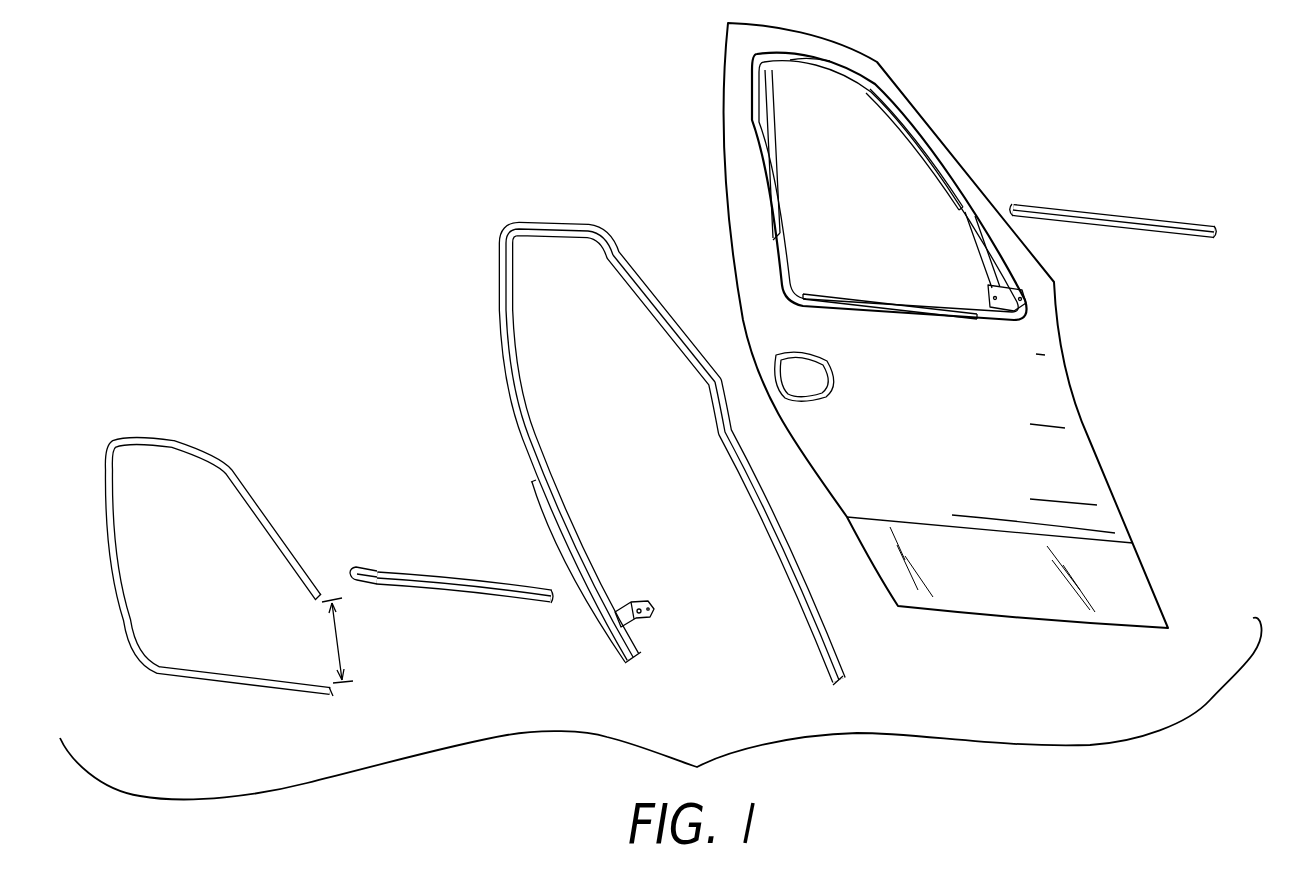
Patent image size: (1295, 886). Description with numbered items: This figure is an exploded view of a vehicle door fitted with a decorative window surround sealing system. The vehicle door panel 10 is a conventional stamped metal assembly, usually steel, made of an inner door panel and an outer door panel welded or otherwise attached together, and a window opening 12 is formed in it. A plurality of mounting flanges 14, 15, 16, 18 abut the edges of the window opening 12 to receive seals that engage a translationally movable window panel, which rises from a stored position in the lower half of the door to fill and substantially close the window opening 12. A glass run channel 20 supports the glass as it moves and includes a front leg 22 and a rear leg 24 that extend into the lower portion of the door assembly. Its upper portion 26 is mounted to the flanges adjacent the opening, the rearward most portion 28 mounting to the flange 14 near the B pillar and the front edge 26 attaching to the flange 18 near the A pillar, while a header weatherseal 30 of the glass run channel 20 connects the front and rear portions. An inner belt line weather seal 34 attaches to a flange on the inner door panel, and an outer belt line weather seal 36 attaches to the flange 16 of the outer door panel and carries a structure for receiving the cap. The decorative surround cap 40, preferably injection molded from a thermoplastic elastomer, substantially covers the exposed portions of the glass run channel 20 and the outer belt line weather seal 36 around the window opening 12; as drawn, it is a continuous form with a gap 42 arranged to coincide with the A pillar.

The vehicle door panel 10 is at (946, 325).
The window opening 12 is at (889, 179).
The mounting flange 14 is at (773, 174).
The mounting flange 15 is at (808, 67).
The mounting flange 16 is at (871, 298).
The mounting flange 18 is at (936, 172).
The glass run channel 20 is at (640, 431).
The front leg 22 is at (779, 556).
The rear leg 24 is at (576, 538).
The upper portion 26 is at (642, 262).
The rearward most portion 28 is at (506, 344).
The header weatherseal 30 is at (567, 222).
The inner belt line weather seal 34 is at (1027, 202).
The outer belt line weather seal 36 is at (353, 569).
The decorative surround cap 40 is at (113, 442).
The gap 42 is at (338, 638).